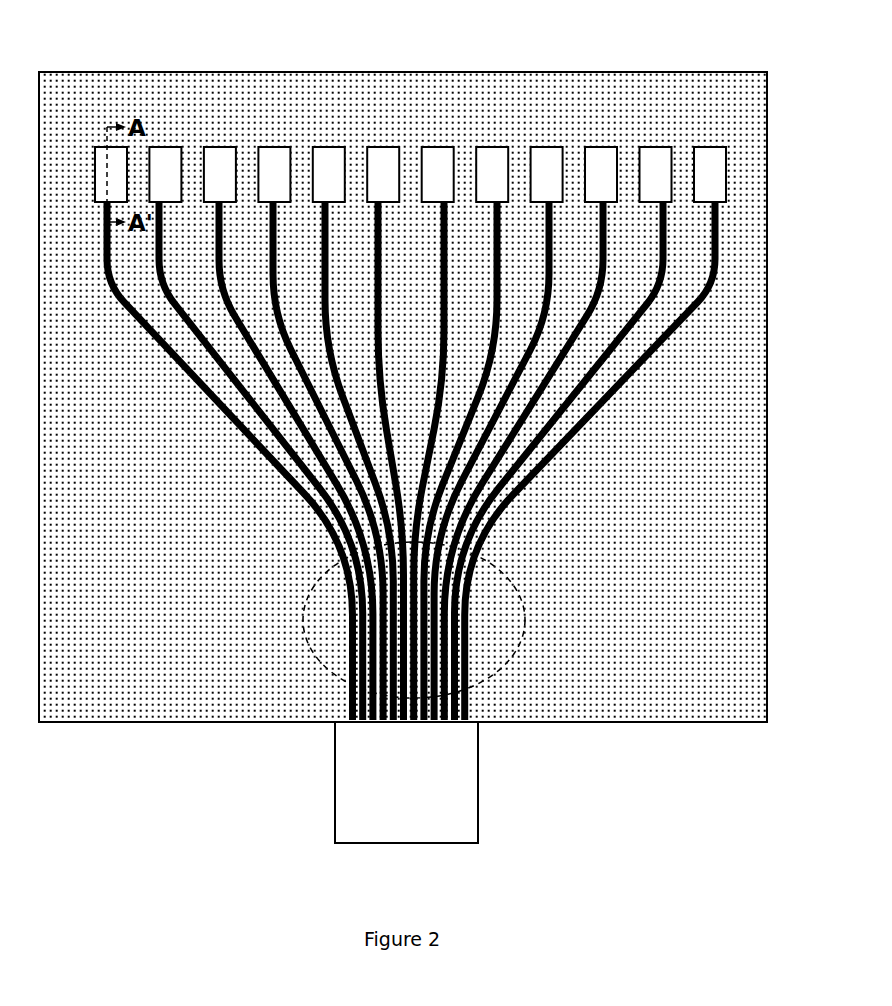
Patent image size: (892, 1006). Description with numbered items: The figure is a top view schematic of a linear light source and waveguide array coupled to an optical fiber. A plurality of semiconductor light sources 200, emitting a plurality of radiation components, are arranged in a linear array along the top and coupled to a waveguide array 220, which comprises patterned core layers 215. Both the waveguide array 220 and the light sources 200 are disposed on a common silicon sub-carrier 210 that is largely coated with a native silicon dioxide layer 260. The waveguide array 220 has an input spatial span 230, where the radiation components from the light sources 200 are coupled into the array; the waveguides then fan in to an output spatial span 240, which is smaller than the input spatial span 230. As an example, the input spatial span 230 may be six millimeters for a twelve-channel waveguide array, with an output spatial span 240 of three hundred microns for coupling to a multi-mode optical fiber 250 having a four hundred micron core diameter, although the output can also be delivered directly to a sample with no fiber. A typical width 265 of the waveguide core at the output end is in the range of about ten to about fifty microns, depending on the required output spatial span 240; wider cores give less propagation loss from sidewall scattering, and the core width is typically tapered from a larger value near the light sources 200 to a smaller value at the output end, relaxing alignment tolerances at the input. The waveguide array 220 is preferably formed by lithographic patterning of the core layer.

The semiconductor light sources 200 is at (727, 140).
The silicon sub-carrier 210 is at (657, 727).
The patterned core layers 215 is at (118, 310).
The waveguide array 220 is at (507, 563).
The input spatial span 230 is at (727, 147).
The output spatial span 240 is at (255, 766).
The multi-mode optical fiber 250 is at (406, 782).
The native silicon dioxide layer 260 is at (163, 678).
The width of the waveguide core 265 is at (403, 707).